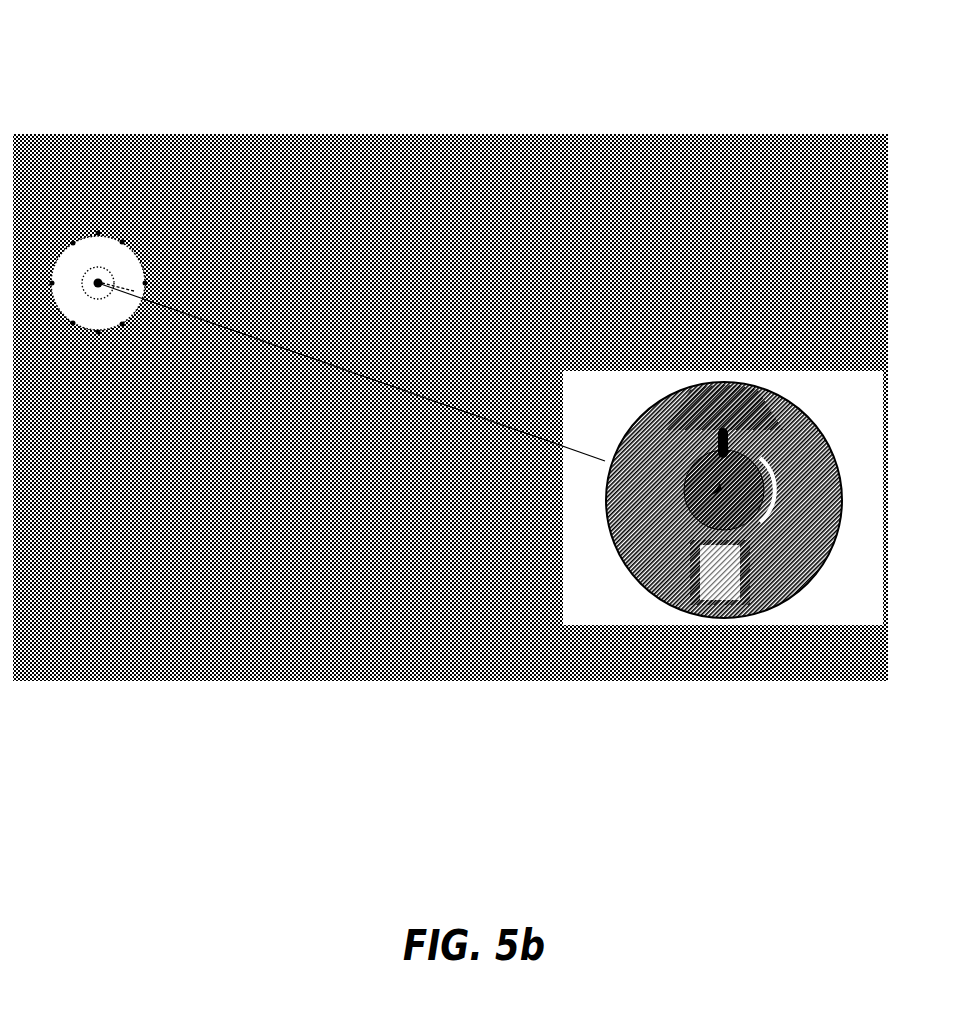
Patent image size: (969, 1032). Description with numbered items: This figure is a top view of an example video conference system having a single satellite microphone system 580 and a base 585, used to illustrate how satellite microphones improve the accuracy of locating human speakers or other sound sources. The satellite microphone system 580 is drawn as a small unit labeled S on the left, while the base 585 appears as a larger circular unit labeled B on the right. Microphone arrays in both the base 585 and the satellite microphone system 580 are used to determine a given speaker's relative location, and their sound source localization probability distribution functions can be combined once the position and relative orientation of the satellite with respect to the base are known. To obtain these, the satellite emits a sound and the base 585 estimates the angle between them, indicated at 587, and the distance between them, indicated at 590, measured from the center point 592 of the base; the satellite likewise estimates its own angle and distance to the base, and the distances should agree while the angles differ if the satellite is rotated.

The satellite microphone system 580 is at (97, 230).
The base 585 is at (700, 627).
The angle theta_BS between source and body 587 is at (124, 252).
The distance d_BS between body and source 590 is at (415, 361).
The center point of body B 592 is at (735, 493).